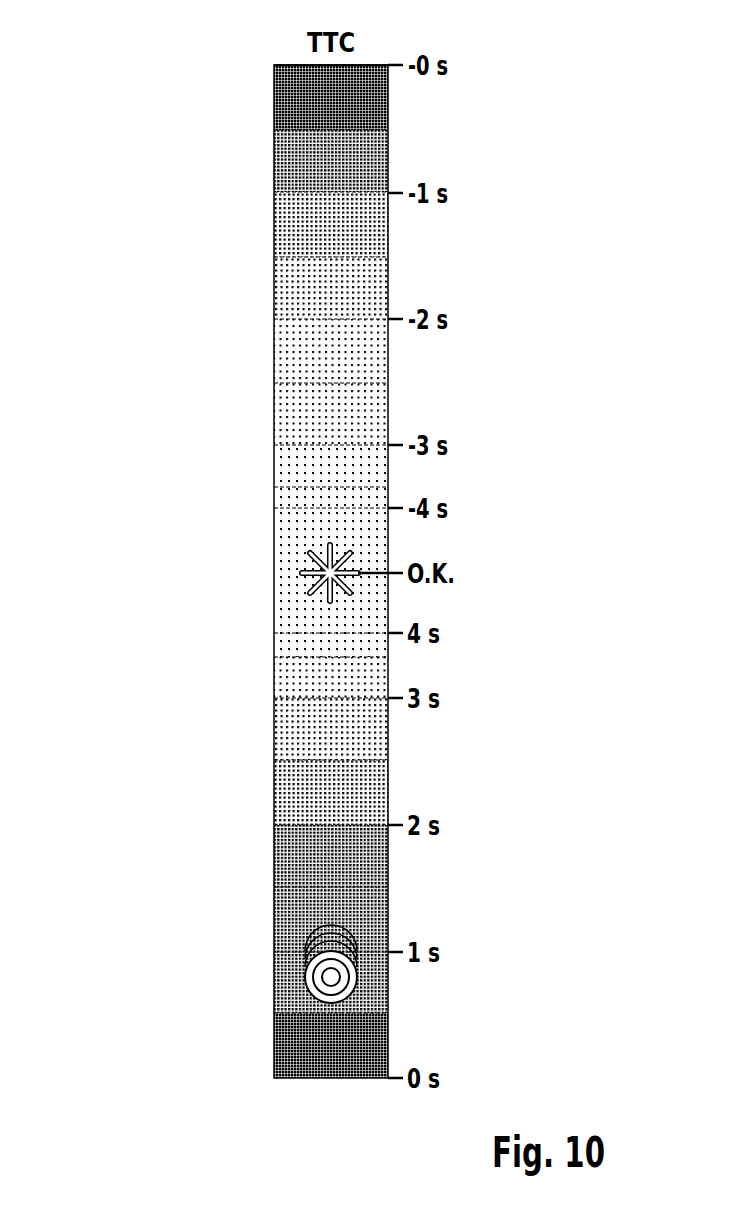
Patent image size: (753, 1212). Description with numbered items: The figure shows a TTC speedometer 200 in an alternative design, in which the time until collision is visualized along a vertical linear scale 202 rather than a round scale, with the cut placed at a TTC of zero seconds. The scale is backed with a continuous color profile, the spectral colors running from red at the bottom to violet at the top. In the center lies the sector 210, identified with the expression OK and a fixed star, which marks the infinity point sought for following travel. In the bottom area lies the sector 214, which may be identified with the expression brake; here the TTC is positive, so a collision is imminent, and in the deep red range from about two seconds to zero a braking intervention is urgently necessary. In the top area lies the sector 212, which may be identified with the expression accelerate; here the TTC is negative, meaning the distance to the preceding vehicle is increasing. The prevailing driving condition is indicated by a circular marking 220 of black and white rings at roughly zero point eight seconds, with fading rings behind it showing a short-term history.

The TTC speedometer 200 is at (146, 60).
The linear scale 202 is at (393, 65).
The sector 210 is at (330, 573).
The sector 212 is at (273, 283).
The sector 214 is at (273, 850).
The circular marking 220 is at (357, 985).